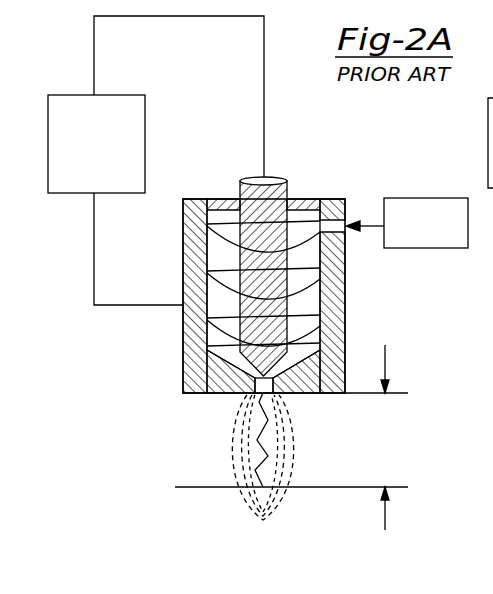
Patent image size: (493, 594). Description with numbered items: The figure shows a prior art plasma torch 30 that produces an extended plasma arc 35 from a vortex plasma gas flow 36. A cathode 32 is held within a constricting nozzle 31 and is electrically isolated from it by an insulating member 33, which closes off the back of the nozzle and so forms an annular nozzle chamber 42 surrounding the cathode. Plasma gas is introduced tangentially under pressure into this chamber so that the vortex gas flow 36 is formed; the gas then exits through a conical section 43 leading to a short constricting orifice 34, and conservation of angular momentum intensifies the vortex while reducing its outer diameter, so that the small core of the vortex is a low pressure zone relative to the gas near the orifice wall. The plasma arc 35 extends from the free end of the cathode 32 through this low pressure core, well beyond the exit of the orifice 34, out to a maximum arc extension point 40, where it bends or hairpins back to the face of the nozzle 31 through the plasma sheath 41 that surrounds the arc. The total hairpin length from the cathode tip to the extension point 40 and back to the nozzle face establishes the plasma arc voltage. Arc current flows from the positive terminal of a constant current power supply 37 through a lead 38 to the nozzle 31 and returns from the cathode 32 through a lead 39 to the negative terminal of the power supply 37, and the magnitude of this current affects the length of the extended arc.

The plasma arc torch 30 is at (313, 279).
The constricting nozzle 31 is at (207, 393).
The cathode 32 is at (270, 181).
The insulating member 33 is at (315, 199).
The constricting orifice 34 is at (276, 398).
The plasma arc 35 is at (252, 469).
The vortex plasma gas flow 36 is at (340, 334).
The constant current power supply 37 is at (135, 108).
The lead 38 is at (94, 237).
The lead 39 is at (94, 70).
The maximum arc extension point 40 is at (279, 488).
The plasma sheath 41 is at (245, 505).
The nozzle chamber 42 is at (310, 290).
The conical section 43 is at (345, 393).